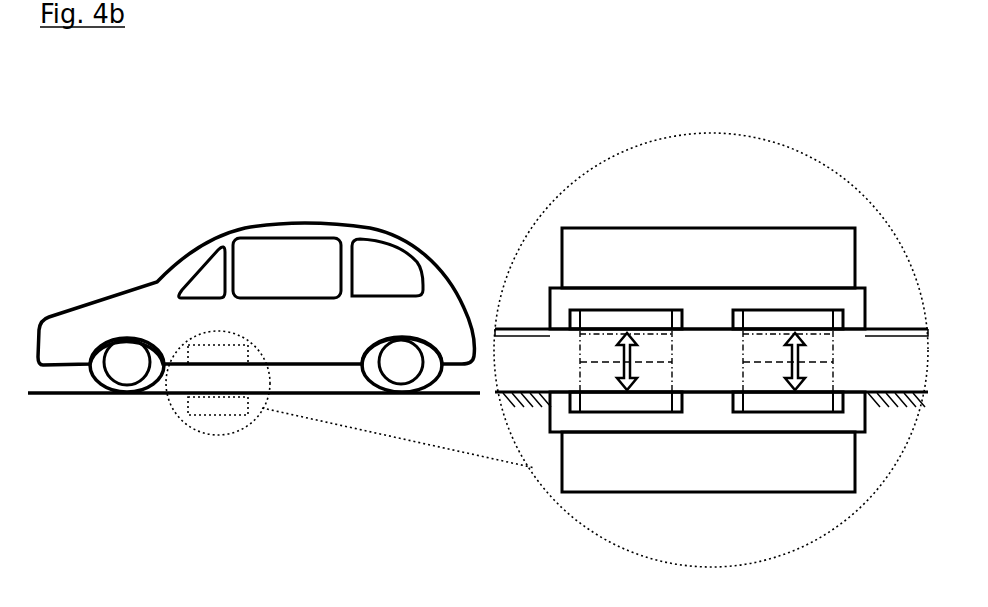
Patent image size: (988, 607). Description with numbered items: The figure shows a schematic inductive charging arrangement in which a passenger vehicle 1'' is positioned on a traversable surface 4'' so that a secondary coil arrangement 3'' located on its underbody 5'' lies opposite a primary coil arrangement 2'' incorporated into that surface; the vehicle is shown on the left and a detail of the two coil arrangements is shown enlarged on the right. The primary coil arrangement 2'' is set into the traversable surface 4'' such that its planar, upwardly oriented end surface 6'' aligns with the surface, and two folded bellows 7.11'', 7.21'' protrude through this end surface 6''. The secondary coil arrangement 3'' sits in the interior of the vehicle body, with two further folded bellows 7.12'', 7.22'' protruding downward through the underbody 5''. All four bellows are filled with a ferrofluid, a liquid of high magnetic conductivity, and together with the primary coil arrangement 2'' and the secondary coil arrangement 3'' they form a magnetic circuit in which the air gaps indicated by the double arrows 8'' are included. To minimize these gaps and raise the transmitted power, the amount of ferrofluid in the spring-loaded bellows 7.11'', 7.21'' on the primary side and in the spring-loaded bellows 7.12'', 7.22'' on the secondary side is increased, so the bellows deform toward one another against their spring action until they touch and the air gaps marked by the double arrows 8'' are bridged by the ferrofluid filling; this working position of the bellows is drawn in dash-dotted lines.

The passenger vehicle 1'' is at (256, 270).
The primary coil arrangement 2'' is at (536, 469).
The secondary coil arrangement 3'' is at (540, 224).
The traversable surface 4'' is at (478, 414).
The underbody 5'' is at (607, 283).
The planar end surface 6'' is at (707, 375).
The folded bellows 7.11'' is at (601, 387).
The folded bellows 7.12'' is at (597, 350).
The folded bellows 7.21'' is at (819, 387).
The folded bellows 7.22'' is at (816, 350).
The double arrows 8'' is at (711, 361).